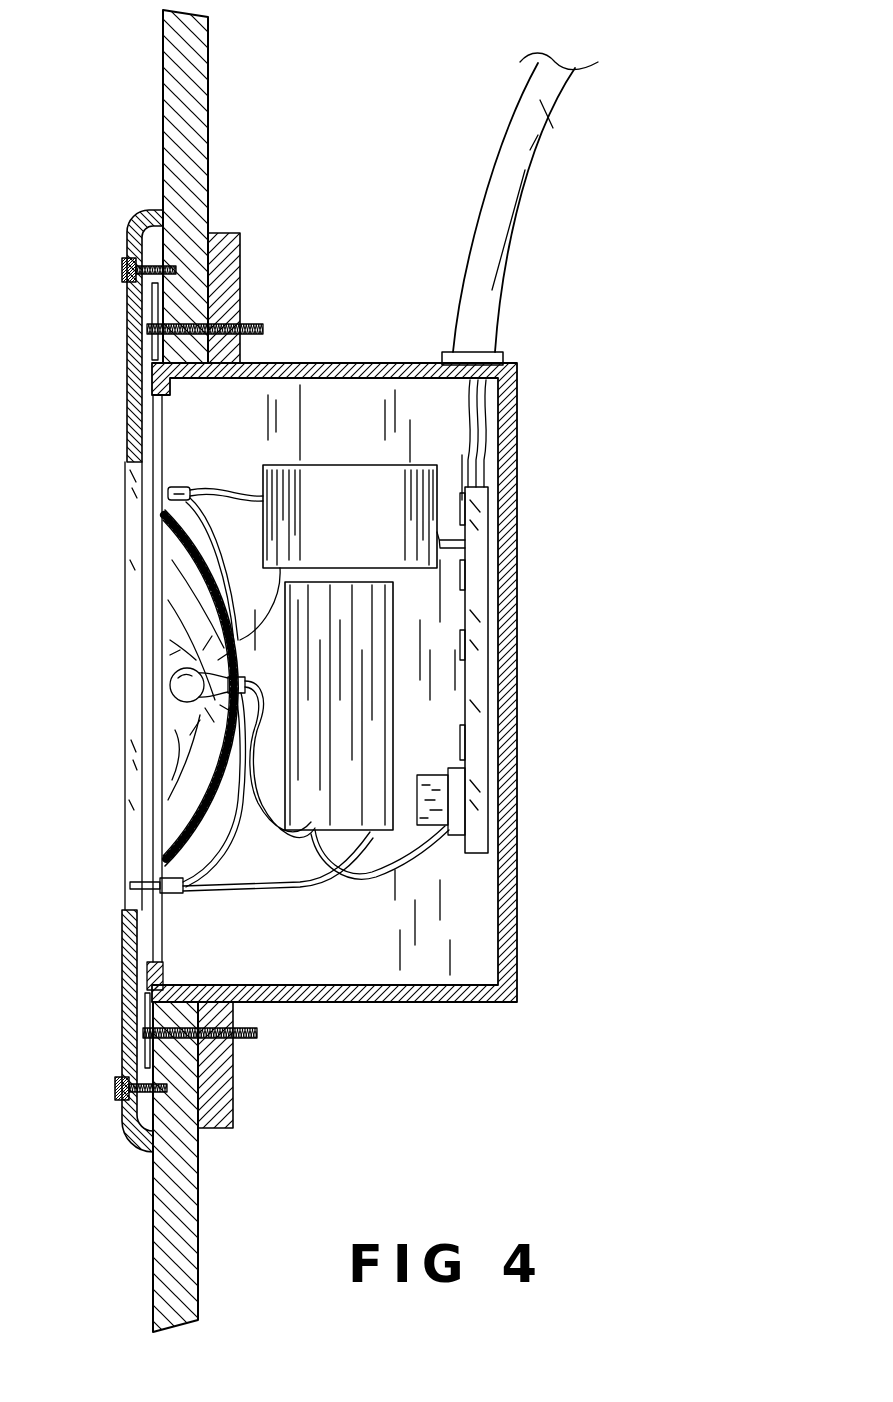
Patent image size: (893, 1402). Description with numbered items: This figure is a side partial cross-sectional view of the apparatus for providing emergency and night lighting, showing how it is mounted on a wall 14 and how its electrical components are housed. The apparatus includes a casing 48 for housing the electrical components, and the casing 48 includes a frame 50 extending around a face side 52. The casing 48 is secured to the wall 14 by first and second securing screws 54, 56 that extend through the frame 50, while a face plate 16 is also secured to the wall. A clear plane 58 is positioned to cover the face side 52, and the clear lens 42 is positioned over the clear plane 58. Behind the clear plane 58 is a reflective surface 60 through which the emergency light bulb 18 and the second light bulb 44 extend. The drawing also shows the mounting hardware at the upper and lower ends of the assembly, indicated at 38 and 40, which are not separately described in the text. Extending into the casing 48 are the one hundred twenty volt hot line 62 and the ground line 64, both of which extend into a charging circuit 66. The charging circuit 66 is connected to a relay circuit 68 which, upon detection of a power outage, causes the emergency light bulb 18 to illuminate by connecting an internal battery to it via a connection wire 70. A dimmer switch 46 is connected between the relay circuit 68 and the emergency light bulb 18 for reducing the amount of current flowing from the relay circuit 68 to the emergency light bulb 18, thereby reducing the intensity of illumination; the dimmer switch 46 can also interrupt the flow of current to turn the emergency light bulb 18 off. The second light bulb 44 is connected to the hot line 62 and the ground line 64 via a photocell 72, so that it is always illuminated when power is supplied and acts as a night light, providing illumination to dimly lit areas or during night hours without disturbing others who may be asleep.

The wall 14 is at (185, 52).
The face plate 16 is at (130, 387).
The emergency light bulb 18 is at (185, 682).
The fastener 38 is at (122, 265).
The lower mounting bracket 40 is at (120, 1088).
The clear lens 42 is at (125, 528).
The second light bulb 44 is at (218, 640).
The dimmer switch 46 is at (150, 885).
The casing 48 is at (517, 425).
The frame 50 is at (155, 297).
The face side 52 is at (140, 940).
The first securing screw 54 is at (265, 328).
The second securing screw 56 is at (257, 1035).
The clear plane 58 is at (155, 797).
The reflective surface 60 is at (222, 750).
The 120 volt hot line 62 is at (470, 435).
The ground line 64 is at (500, 386).
The charging circuit 66 is at (480, 585).
The relay circuit 68 is at (360, 795).
The connection wire 70 is at (435, 848).
The photocell 72 is at (332, 500).